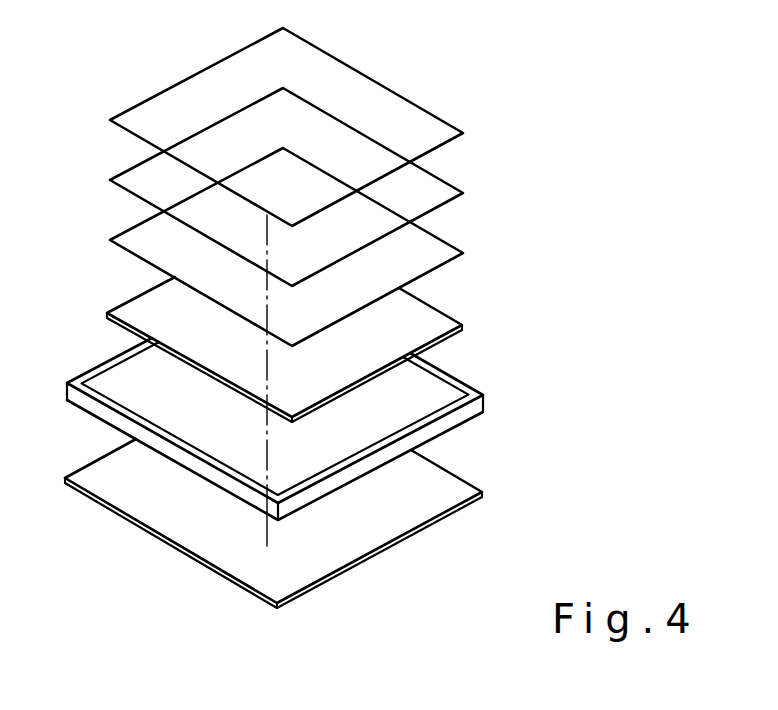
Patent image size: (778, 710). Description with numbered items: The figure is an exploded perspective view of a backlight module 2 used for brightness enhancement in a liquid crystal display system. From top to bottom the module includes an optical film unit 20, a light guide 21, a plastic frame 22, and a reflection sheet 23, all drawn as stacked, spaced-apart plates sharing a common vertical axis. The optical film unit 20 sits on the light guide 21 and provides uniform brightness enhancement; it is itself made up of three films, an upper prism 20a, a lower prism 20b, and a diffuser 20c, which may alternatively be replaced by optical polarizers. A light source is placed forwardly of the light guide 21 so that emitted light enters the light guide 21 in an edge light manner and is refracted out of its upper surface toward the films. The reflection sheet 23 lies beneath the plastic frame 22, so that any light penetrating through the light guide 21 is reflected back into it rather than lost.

The backlight module 2 is at (636, 330).
The optical film unit 20 is at (90, 122).
The upper prism 20a is at (447, 129).
The lower prism 20b is at (447, 189).
The diffuser 20c is at (447, 249).
The light guide 21 is at (445, 321).
The plastic frame 22 is at (475, 404).
The reflection sheet 23 is at (455, 488).